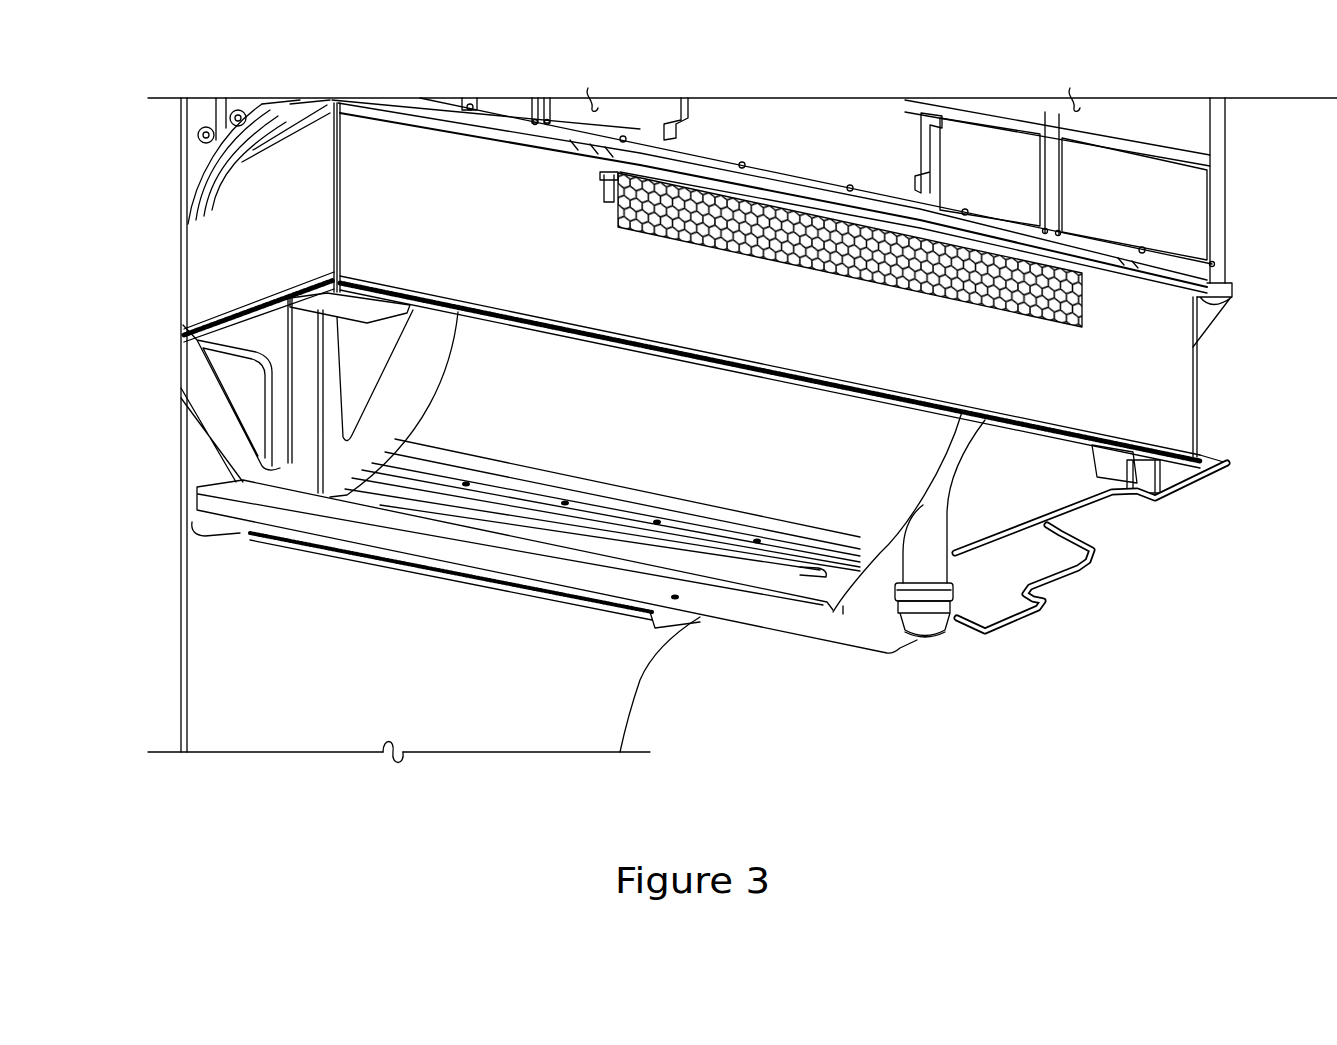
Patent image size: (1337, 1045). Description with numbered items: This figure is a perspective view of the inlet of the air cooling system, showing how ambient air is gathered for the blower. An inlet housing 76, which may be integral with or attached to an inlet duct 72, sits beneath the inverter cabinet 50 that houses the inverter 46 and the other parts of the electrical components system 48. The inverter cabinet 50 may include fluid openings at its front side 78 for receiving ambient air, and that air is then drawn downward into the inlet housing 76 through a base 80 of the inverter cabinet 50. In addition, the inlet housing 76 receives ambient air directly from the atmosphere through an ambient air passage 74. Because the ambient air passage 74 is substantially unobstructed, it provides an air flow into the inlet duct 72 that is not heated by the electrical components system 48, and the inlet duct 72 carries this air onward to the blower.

The inverter 46 is at (900, 120).
The electrical components system 48 is at (1130, 120).
The inverter cabinet 50 is at (1214, 198).
The inlet duct 72 is at (597, 716).
The ambient air passage 74 is at (936, 296).
The inlet housing 76 is at (880, 419).
The front side 78 is at (726, 118).
The base 80 is at (1196, 276).